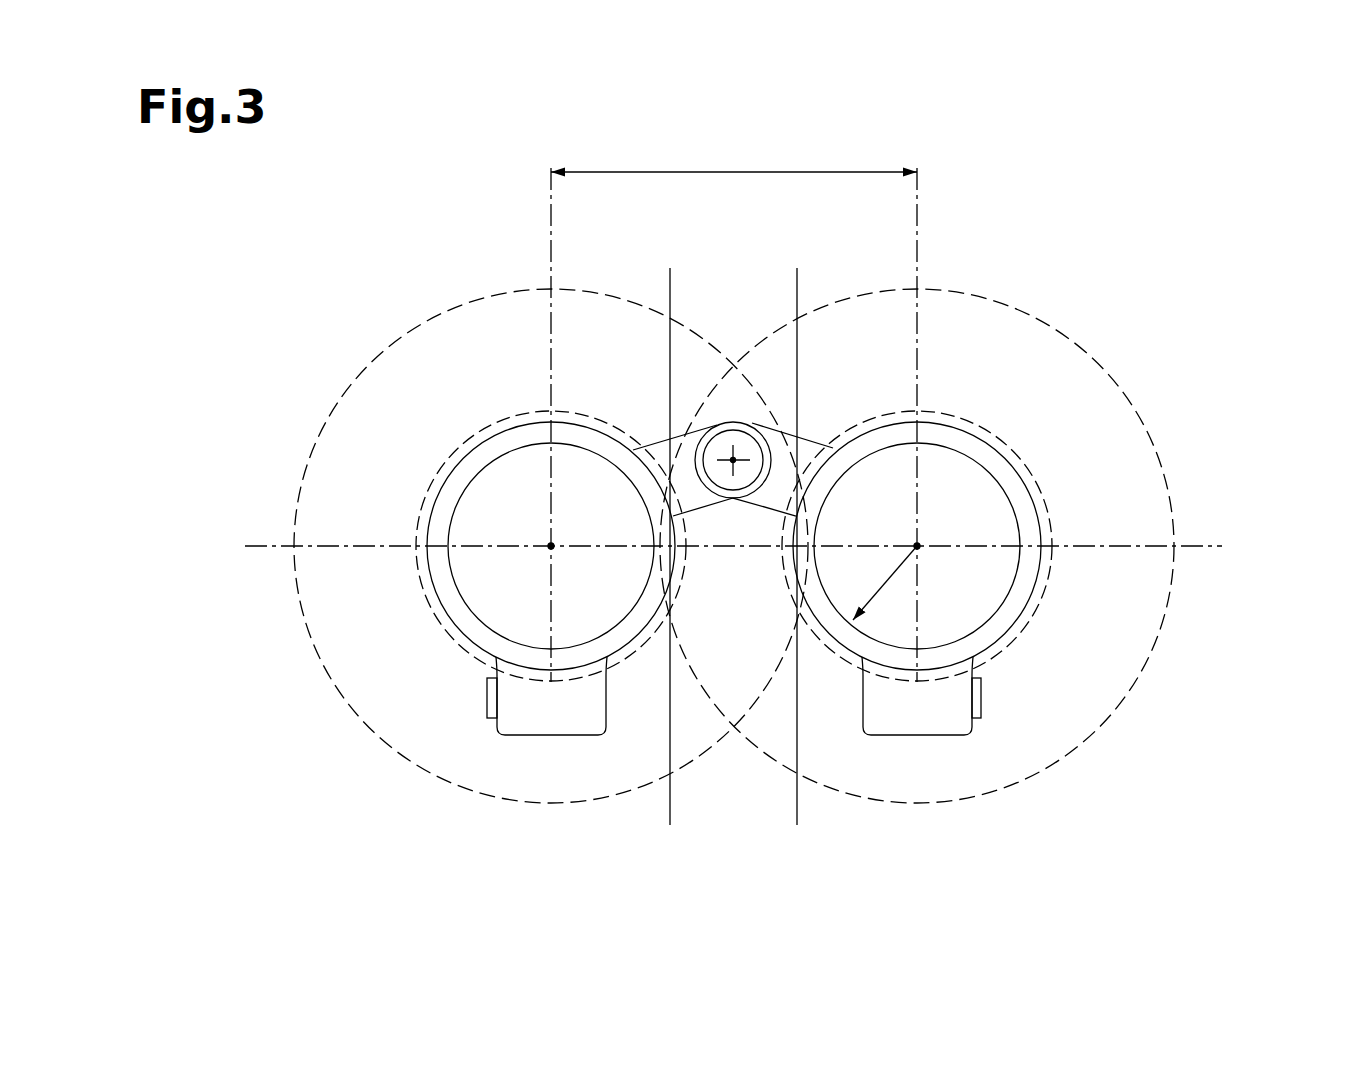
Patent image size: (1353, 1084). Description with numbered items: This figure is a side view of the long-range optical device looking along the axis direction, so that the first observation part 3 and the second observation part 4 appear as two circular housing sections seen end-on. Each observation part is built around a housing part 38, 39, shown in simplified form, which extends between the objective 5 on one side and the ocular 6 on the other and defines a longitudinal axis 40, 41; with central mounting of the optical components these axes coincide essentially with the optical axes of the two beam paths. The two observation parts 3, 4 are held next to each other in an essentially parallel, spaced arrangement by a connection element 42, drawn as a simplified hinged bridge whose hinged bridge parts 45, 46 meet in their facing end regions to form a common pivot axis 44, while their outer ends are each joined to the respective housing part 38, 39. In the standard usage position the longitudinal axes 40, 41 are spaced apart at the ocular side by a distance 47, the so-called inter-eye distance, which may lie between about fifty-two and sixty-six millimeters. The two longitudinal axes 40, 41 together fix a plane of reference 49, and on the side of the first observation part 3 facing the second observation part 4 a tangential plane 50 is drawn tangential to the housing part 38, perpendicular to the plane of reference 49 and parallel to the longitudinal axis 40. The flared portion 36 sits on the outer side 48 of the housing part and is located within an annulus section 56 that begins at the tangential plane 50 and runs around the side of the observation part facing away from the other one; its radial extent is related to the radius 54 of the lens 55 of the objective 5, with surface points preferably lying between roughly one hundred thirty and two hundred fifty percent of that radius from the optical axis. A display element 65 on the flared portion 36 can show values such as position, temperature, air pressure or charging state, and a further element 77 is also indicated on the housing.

The first observation part 3 is at (1028, 398).
The second observation part 4 is at (470, 407).
The objective 5 is at (425, 618).
The ocular 6 is at (1047, 487).
The flared portion 36 is at (557, 695).
The housing part 38 is at (1012, 467).
The housing part 39 is at (447, 517).
The longitudinal axis 40 is at (920, 548).
The longitudinal axis 41 is at (551, 546).
The connection element 42 is at (737, 400).
The pivot axis 44 is at (735, 460).
The hinged bridge part 45 is at (777, 442).
The hinged bridge part 46 is at (652, 447).
The distance 47 is at (770, 172).
The outer side 48 is at (931, 418).
The plane of reference 49 is at (1128, 540).
The tangential plane 50 is at (672, 683).
The radius 54 is at (884, 584).
The lens 55 is at (972, 582).
The annulus section 56 is at (355, 578).
The display element 65 is at (977, 715).
The left retaining tab 77 is at (580, 737).